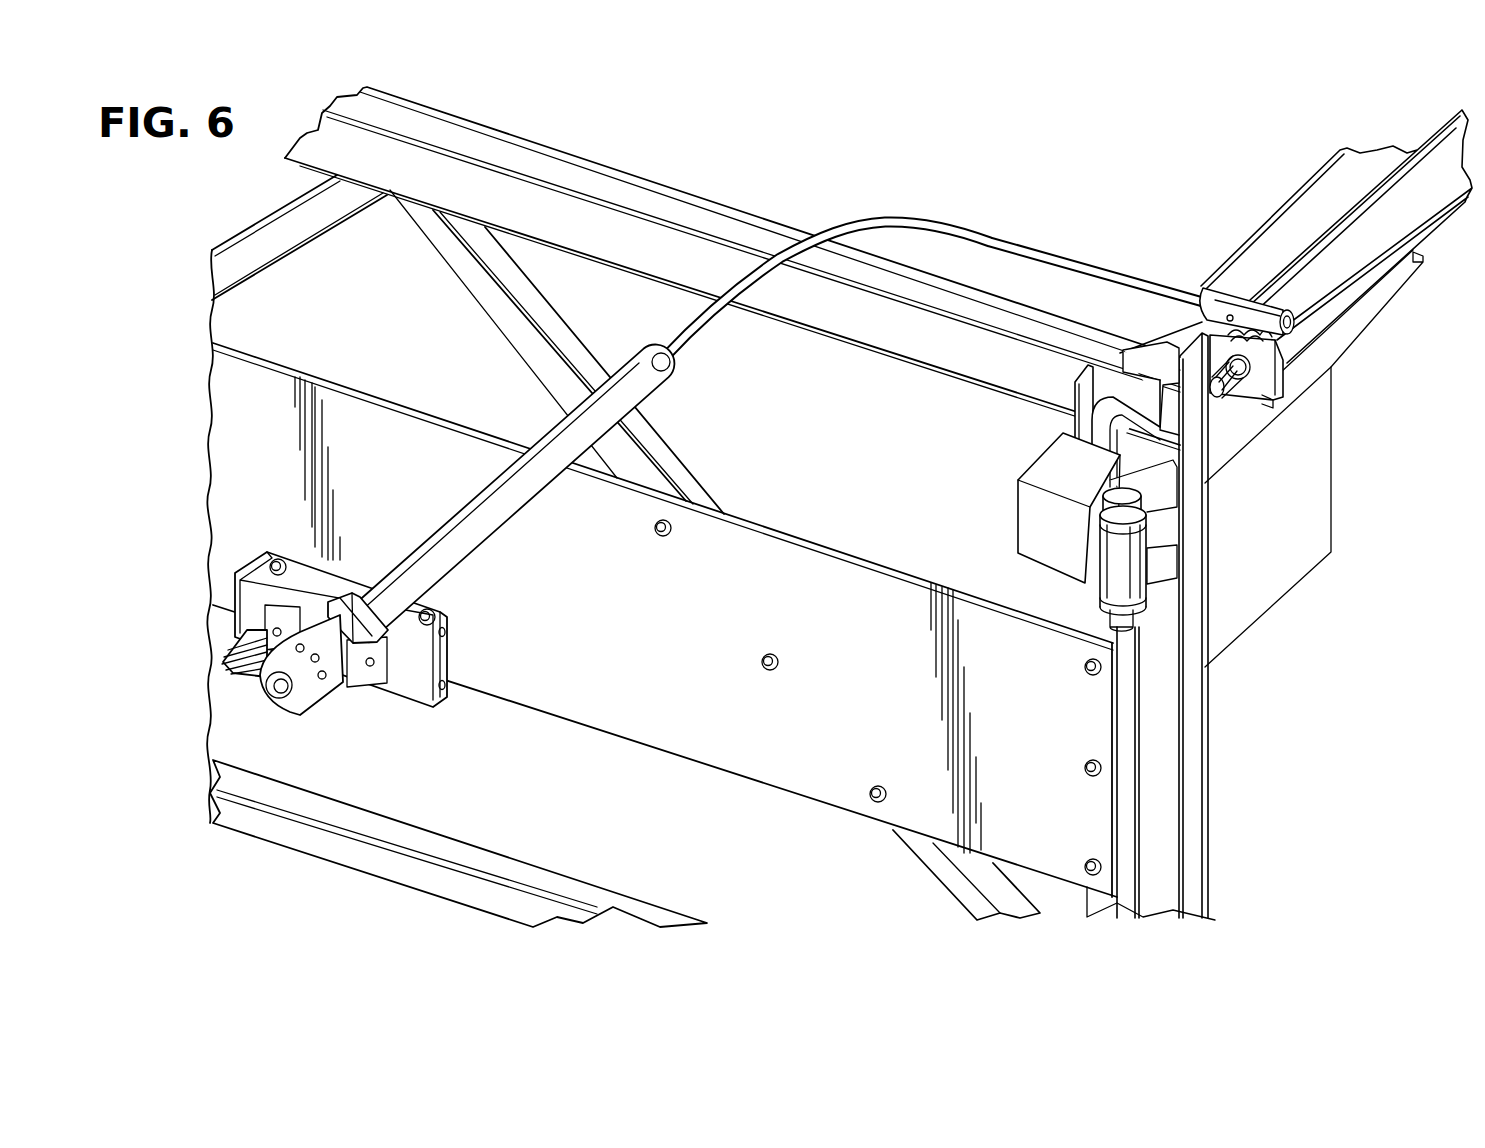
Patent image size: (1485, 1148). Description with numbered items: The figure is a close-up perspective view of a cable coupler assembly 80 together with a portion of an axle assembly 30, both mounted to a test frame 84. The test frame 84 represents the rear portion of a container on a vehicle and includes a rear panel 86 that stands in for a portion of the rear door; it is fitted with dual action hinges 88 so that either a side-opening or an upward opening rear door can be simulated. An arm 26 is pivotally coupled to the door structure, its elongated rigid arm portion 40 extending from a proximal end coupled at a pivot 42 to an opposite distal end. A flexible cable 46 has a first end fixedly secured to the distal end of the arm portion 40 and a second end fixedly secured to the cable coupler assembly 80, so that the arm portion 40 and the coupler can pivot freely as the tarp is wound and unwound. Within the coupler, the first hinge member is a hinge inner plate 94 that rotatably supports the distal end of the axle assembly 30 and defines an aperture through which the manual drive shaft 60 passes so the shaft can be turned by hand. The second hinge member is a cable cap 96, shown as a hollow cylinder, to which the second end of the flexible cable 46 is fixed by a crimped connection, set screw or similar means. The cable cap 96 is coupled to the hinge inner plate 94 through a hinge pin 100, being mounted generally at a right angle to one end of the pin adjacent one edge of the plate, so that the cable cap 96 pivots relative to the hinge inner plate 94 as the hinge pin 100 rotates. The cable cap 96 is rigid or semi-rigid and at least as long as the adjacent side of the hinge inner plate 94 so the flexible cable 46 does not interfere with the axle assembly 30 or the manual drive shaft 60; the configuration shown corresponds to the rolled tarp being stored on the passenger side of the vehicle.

The arm 26 is at (383, 497).
The axle assembly 30 is at (1358, 240).
The arm portion 40 is at (485, 512).
The pivot 42 is at (268, 702).
The flexible cable 46 is at (837, 229).
The manual drive shaft 60 is at (1219, 392).
The cable coupler assembly 80 is at (1181, 258).
The test frame 84 is at (467, 135).
The rear panel 86 is at (793, 743).
The dual action hinges 88 is at (1145, 638).
The hinge inner plate 94 is at (1262, 378).
The cable cap 96 is at (1250, 305).
The hinge pin 100 is at (1277, 402).